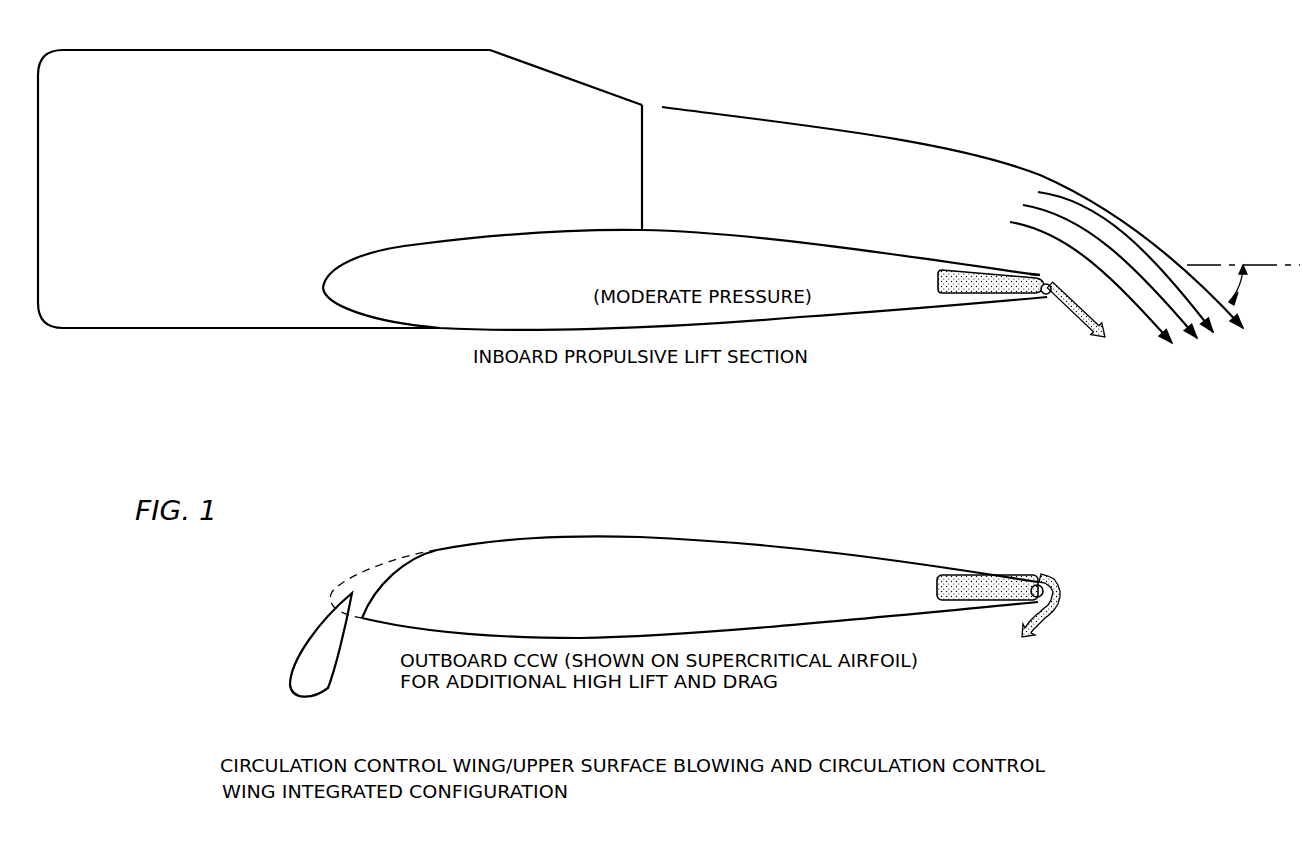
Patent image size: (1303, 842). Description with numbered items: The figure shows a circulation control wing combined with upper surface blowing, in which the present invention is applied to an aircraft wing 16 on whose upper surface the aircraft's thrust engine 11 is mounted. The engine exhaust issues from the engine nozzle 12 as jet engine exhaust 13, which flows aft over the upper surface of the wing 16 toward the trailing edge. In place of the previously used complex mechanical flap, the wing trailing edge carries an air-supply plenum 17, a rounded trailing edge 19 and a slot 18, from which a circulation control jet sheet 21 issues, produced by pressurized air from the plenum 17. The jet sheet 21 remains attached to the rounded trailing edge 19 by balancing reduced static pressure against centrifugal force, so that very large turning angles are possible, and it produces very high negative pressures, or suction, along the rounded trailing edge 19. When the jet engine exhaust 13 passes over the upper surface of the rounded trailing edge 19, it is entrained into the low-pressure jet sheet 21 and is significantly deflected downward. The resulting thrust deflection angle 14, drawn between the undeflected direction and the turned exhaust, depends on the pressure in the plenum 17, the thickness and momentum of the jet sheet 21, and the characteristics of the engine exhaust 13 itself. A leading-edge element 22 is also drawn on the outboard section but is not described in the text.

The thrust engine 11 is at (263, 168).
The engine nozzle 12 is at (642, 180).
The jet engine exhaust 13 is at (811, 120).
The thrust deflection angle 14 is at (1236, 290).
The aircraft wing 16 is at (513, 291).
The air-supply plenum 17 is at (938, 283).
The slot 18 is at (1048, 277).
The rounded trailing edge 19 is at (1048, 294).
The circulation control jet sheet 21 is at (1105, 337).
The leading edge droop / slat 22 is at (312, 690).